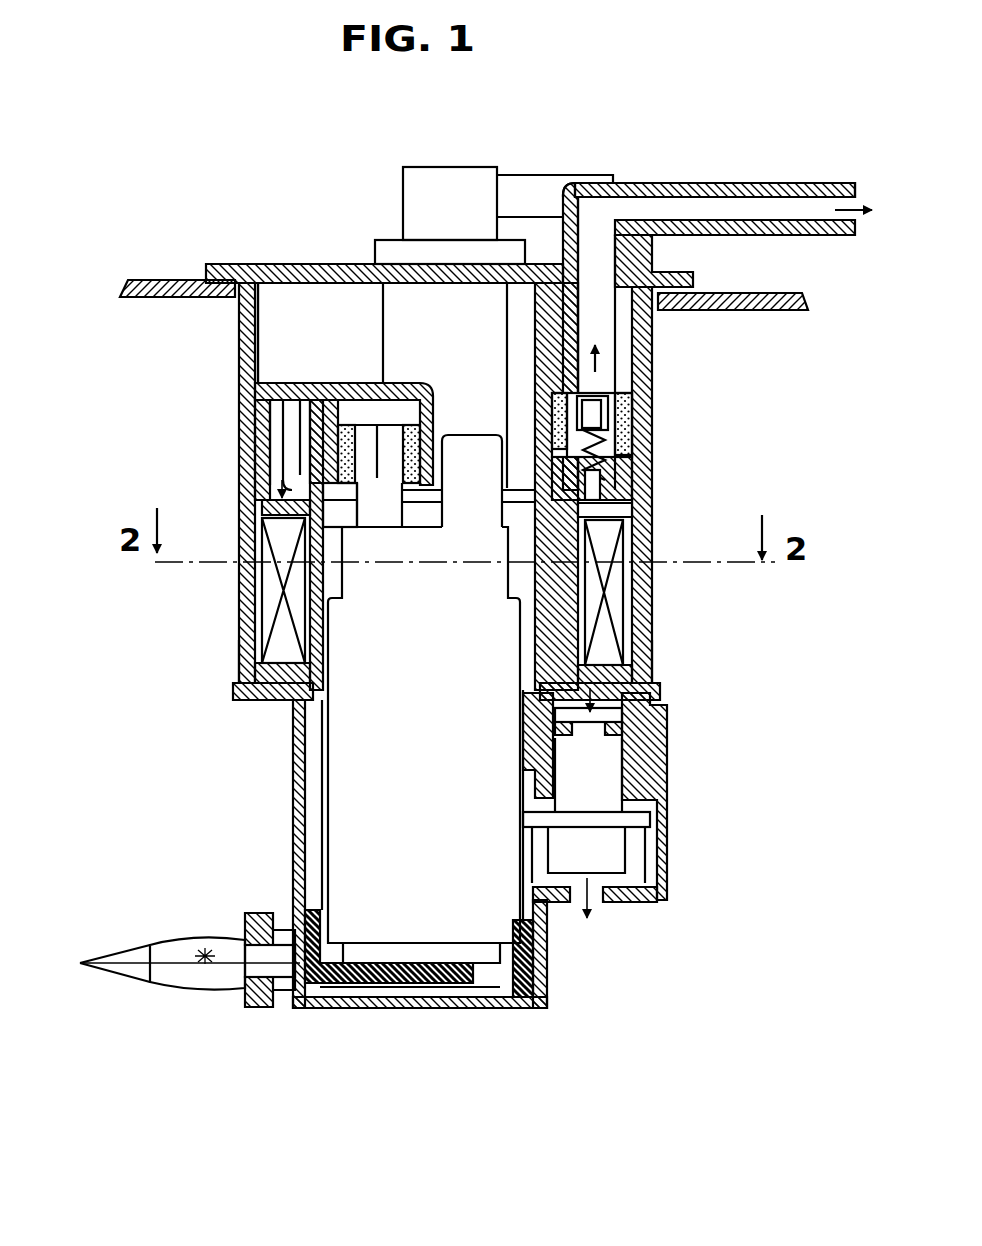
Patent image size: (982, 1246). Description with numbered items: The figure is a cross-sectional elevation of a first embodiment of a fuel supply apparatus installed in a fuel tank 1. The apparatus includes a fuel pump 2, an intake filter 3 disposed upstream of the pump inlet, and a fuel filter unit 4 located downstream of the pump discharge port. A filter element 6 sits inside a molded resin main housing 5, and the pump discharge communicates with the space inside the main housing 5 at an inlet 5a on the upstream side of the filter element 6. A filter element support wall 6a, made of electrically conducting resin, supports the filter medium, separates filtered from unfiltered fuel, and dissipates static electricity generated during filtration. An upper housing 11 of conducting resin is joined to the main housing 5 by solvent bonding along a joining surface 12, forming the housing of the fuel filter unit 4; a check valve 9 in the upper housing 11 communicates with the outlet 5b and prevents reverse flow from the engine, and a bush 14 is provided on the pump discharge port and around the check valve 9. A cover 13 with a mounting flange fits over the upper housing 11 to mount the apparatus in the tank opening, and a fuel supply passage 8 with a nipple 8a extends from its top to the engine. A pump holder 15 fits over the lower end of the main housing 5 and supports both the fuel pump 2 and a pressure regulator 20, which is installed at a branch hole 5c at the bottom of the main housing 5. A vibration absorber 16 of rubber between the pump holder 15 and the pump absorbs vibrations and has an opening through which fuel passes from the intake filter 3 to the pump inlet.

The fuel tank 1 is at (174, 280).
The fuel pump 2 is at (353, 762).
The intake filter 3 is at (190, 937).
The fuel filter unit 4 is at (240, 677).
The main housing 5 is at (240, 608).
The inlet 5a is at (290, 458).
The outlet 5b is at (640, 490).
The branch hole 5c is at (605, 688).
The filter element 6 is at (608, 600).
The filter element support wall 6a is at (270, 632).
The fuel supply passage 8 is at (703, 408).
The nipple 8a is at (810, 185).
The check valve 9 is at (610, 430).
The upper housing 11 is at (292, 388).
The joining surface 12 is at (280, 484).
The cover 13 is at (238, 264).
The bush 14 is at (347, 430).
The pump holder 15 is at (545, 985).
The vibration absorber 16 is at (497, 980).
The pressure regulator 20 is at (612, 848).